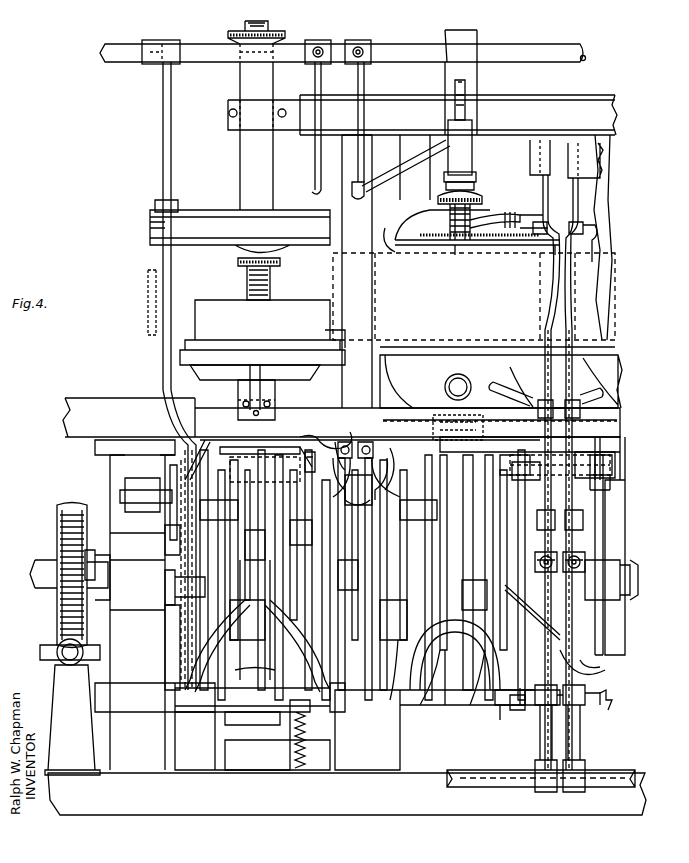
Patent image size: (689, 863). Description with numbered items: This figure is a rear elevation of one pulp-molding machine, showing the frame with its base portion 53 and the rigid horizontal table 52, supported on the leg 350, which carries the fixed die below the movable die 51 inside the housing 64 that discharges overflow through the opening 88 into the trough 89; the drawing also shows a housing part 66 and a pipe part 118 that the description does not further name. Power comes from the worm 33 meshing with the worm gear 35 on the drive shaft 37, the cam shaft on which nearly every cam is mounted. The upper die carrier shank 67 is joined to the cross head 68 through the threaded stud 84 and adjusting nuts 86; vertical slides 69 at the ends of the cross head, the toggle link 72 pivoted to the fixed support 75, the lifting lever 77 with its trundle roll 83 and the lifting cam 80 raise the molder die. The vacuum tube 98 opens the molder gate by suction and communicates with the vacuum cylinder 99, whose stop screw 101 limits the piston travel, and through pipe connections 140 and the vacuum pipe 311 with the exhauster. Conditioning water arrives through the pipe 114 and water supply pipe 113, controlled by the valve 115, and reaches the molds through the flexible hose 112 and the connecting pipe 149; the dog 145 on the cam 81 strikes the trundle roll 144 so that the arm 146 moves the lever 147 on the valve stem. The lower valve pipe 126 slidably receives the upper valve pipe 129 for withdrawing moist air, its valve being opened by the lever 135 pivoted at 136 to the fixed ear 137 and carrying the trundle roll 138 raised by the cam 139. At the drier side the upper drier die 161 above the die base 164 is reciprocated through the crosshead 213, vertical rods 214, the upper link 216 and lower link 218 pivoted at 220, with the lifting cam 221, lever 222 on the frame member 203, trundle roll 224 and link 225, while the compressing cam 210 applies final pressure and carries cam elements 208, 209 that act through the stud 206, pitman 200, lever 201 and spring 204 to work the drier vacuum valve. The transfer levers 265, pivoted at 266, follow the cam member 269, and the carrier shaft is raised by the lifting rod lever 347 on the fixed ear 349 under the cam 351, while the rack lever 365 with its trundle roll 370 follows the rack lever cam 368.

The pipe connections 140 is at (560, 56).
The adjustable stop screw 101 is at (466, 96).
The vacuum pipe 311 is at (360, 127).
The vacuum tube 98 is at (400, 160).
The cross head 68 is at (535, 150).
The vacuum cylinder 99 is at (463, 152).
The adjusting nuts 86 is at (445, 186).
The threaded stud 84 is at (448, 206).
The shank 67 is at (480, 222).
The vertical slides 69 is at (540, 192).
The movable die 51 is at (398, 225).
The crosshead 213 is at (218, 215).
The vertical rods 214 is at (172, 278).
The movable upper drier die 161 is at (222, 310).
The die base 164 is at (225, 355).
The pitman 200 is at (300, 432).
The housing 66 is at (597, 300).
The lower valve pipe 126 is at (612, 244).
The flexible hose 112 is at (612, 262).
The housing 64 is at (408, 385).
The opening 88 is at (450, 382).
The trough 89 is at (450, 395).
The upper valve pipe 129 is at (600, 372).
The connecting pipe 149 is at (602, 393).
The table 52 is at (80, 430).
The rack lever 365 is at (165, 418).
The link 225 is at (212, 440).
The lever 201 is at (340, 442).
The cam element 209 is at (235, 447).
The stud 206 is at (262, 460).
The cam element 208 is at (300, 452).
The water supply pipe 113 is at (600, 447).
The lever 135 is at (500, 432).
The pivot 136 is at (612, 460).
The fixed ear 137 is at (600, 482).
The trundle roll 138 is at (552, 498).
The cam 139 is at (515, 543).
The trundle roll 144 is at (535, 620).
The dog 145 is at (595, 620).
The pipe 118 is at (600, 665).
The valve 115 is at (580, 690).
The pipe 114 is at (600, 765).
The base portion 53 is at (640, 780).
The fixed ear 349 is at (145, 492).
The lifting rod lever 347 is at (170, 500).
The rack lever cam 368 is at (200, 537).
The trundle roll 370 is at (200, 585).
The cam 351 is at (165, 630).
The worm gear 35 is at (60, 535).
The drive shaft 37 is at (40, 600).
The worm 33 is at (55, 648).
The leg 350 is at (115, 740).
The compressing cam 210 is at (222, 490).
The fixed support 75 is at (407, 447).
The transfer levers 265 is at (392, 478).
The cam member 269 is at (350, 485).
The pivot 266 is at (348, 505).
The cam 81 is at (520, 560).
The lever 222 is at (252, 625).
The lifting cam 221 is at (222, 658).
The trundle roll 224 is at (282, 660).
The pivot 220 is at (205, 712).
The lower link 218 is at (235, 735).
The spring 204 is at (300, 748).
The upper link 216 is at (318, 732).
The frame member 203 is at (375, 755).
The toggle link 72 is at (395, 705).
The lifting lever 77 is at (430, 708).
The trundle roll 83 is at (450, 708).
The lifting cam 80 is at (478, 708).
The arm 146 is at (505, 712).
The lever 147 is at (518, 712).